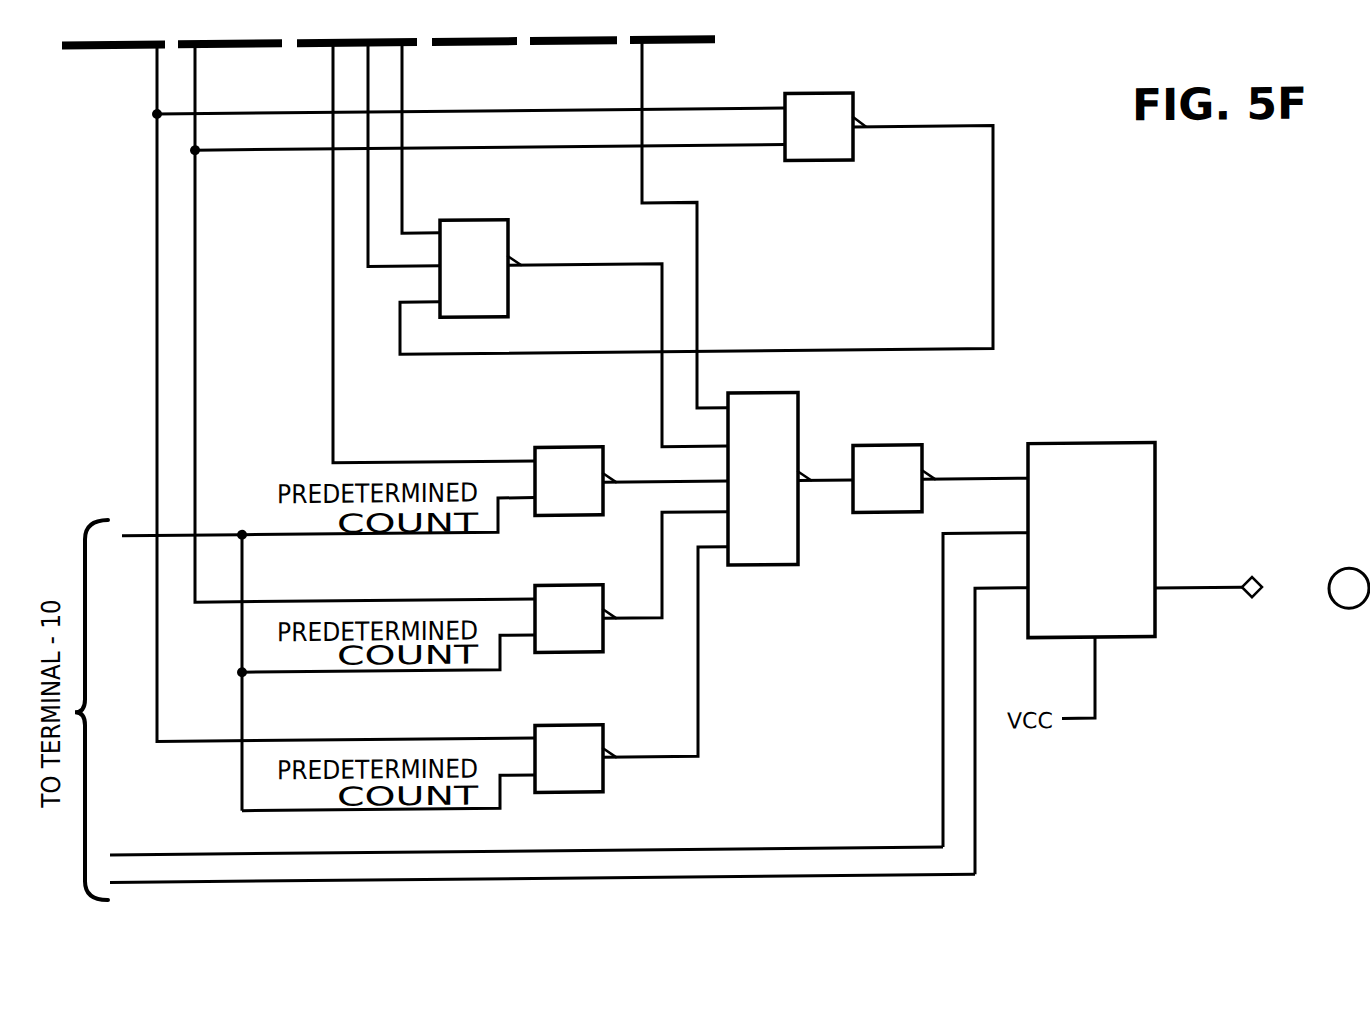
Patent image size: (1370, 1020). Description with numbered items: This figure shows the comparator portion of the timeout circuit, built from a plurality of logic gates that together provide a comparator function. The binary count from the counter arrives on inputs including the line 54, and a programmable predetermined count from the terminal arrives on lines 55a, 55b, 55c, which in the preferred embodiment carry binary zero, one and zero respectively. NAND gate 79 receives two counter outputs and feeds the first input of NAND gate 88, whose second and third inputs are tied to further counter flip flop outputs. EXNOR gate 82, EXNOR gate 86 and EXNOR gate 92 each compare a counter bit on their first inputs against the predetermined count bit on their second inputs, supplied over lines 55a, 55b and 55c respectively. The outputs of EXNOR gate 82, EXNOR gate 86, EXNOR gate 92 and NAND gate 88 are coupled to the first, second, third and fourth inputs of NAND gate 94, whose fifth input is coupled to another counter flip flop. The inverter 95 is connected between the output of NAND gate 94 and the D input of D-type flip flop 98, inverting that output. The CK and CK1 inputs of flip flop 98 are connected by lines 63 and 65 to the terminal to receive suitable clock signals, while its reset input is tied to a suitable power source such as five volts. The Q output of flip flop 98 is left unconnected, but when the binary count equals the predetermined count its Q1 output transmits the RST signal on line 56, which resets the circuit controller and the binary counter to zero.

The input line from terminal 54 is at (135, 534).
The line 55a is at (500, 813).
The line 55b is at (455, 674).
The line 55c is at (455, 537).
The line 56 is at (1195, 599).
The line 63 is at (943, 820).
The line 65 is at (975, 812).
The NAND gate 79 is at (840, 101).
The EXNOR gate 82 is at (583, 730).
The EXNOR gate 86 is at (580, 590).
The NAND gate 88 is at (490, 224).
The EXNOR gate 92 is at (580, 452).
The NAND gate 94 is at (797, 418).
The inverter 95 is at (900, 453).
The D-type flip flop 98 is at (1135, 454).